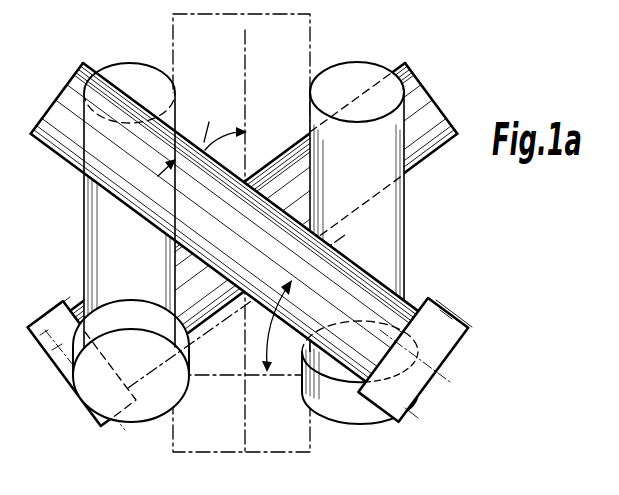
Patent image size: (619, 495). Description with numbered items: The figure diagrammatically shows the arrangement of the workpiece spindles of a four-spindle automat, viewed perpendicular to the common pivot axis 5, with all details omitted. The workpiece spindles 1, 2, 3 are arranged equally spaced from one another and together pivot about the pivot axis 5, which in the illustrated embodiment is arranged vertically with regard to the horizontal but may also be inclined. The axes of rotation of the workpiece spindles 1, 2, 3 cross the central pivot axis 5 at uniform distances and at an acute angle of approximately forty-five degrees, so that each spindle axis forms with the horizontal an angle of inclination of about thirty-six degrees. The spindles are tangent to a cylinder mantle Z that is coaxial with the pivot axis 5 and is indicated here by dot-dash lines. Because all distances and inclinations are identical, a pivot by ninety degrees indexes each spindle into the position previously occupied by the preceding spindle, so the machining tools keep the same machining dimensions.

The workpiece spindle 1 is at (448, 345).
The workpiece spindle 2 is at (133, 413).
The workpiece spindle 3 is at (50, 328).
The pivot axis 5 is at (247, 83).
The horizontal reference line H is at (214, 378).
The cylinder mantle Z is at (318, 30).